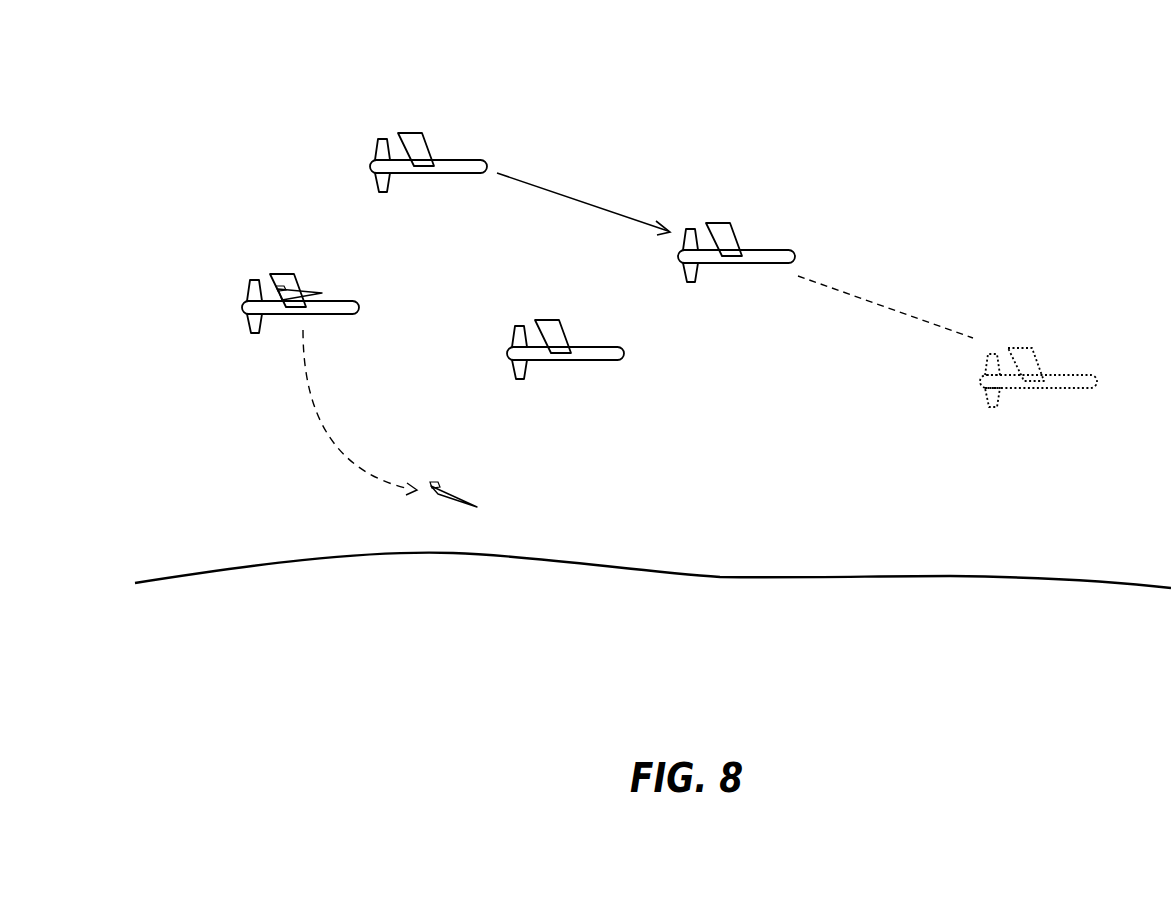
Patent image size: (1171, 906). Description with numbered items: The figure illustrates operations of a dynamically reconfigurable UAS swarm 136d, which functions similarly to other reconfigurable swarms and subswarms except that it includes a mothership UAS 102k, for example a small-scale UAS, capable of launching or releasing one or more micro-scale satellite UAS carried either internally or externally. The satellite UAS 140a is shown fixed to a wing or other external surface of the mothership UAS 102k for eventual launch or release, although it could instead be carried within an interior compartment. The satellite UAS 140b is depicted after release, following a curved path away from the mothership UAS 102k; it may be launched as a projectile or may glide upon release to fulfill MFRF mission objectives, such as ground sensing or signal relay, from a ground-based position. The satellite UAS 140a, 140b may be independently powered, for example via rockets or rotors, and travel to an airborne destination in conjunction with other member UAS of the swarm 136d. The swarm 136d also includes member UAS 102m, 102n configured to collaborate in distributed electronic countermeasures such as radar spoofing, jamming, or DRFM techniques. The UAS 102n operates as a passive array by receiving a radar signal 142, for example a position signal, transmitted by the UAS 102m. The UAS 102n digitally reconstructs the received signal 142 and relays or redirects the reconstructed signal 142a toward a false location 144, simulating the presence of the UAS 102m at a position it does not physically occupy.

The swarm 136d is at (160, 87).
The UAS 102m is at (450, 157).
The radar signal 142 is at (578, 198).
The UAS 102n is at (767, 247).
The relayed reconstructed signal 142a is at (868, 297).
The false location 144 is at (1073, 373).
The mothership UAS 102k is at (336, 321).
The satellite UAS 140a is at (302, 289).
The satellite UAS 140b is at (443, 483).